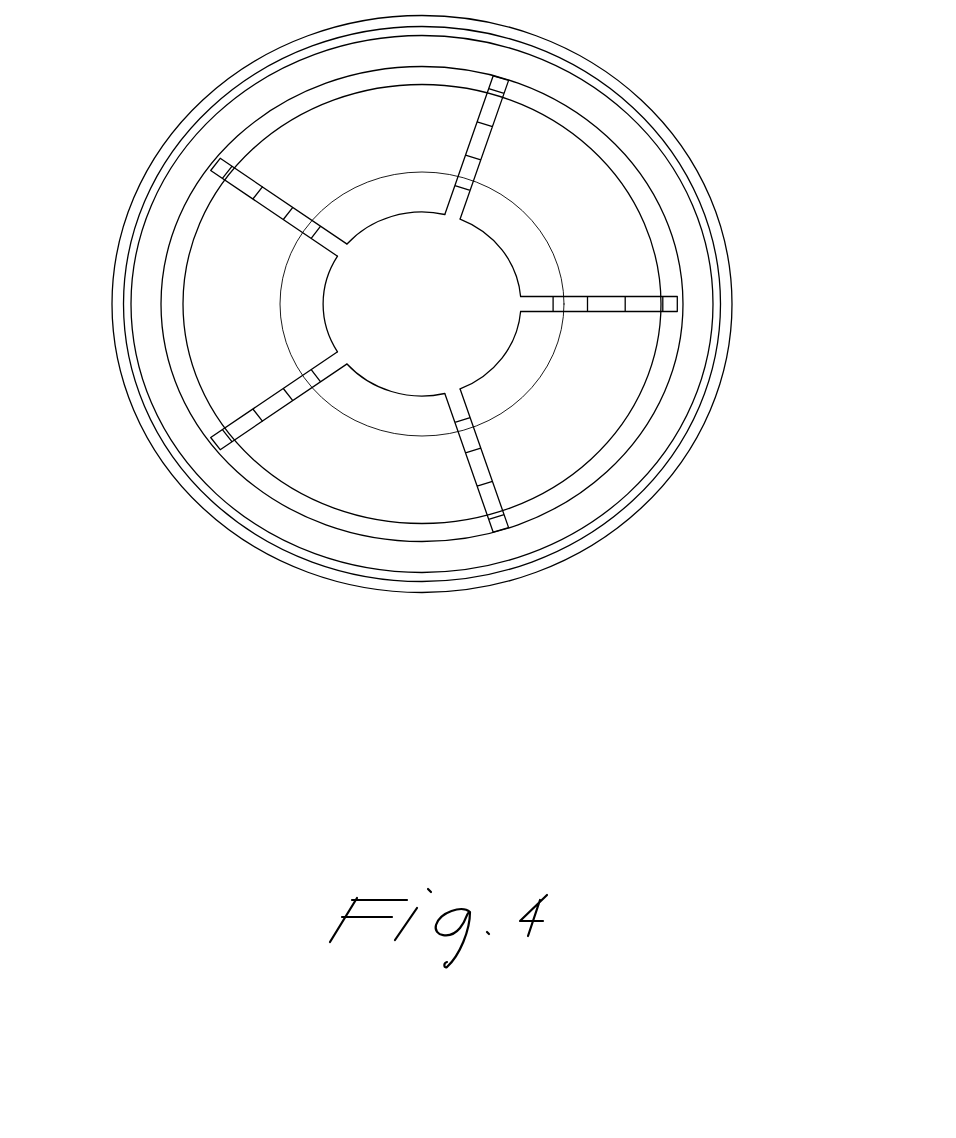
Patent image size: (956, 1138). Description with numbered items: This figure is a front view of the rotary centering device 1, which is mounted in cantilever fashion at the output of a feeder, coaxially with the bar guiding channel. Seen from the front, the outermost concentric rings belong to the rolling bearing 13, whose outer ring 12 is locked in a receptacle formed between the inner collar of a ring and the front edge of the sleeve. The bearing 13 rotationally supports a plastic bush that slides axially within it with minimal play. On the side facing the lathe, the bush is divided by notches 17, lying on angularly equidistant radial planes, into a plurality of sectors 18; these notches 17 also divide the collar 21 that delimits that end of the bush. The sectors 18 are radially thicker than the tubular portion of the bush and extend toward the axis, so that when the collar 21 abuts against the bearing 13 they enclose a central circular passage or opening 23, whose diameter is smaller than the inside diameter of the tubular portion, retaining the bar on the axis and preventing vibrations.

The rotary centering device 1 is at (152, 108).
The outer ring 12 is at (733, 366).
The rolling bearing 13 is at (597, 500).
The notches 17 is at (647, 308).
The sectors 18 is at (608, 198).
The collar 21 is at (636, 422).
The circular passage or opening 23 is at (400, 248).